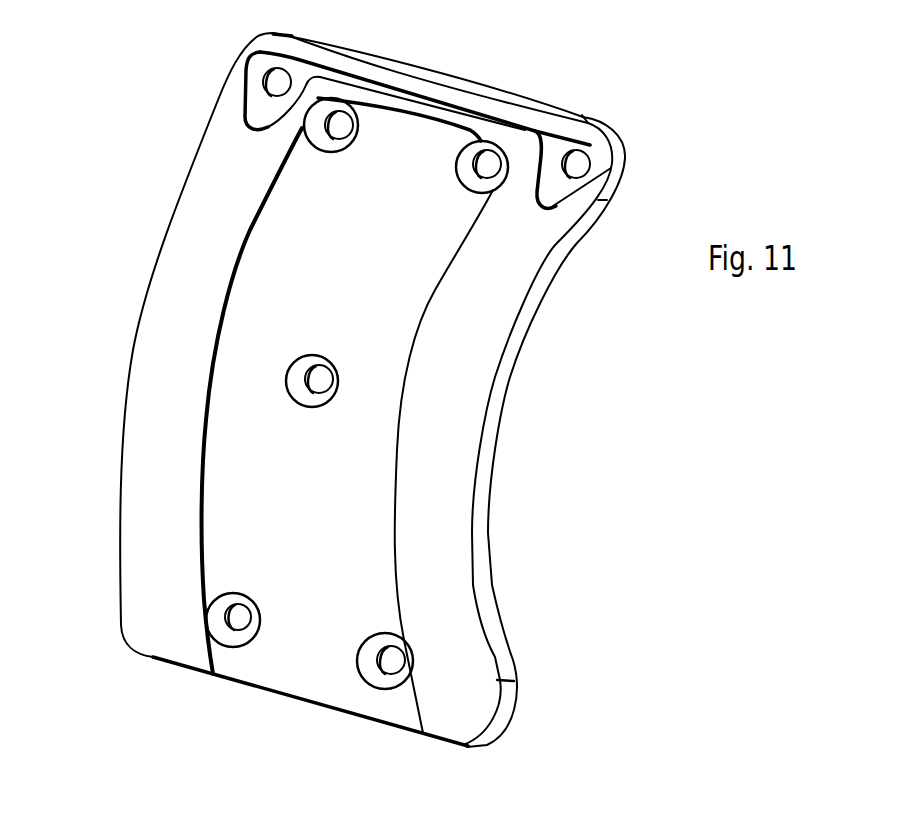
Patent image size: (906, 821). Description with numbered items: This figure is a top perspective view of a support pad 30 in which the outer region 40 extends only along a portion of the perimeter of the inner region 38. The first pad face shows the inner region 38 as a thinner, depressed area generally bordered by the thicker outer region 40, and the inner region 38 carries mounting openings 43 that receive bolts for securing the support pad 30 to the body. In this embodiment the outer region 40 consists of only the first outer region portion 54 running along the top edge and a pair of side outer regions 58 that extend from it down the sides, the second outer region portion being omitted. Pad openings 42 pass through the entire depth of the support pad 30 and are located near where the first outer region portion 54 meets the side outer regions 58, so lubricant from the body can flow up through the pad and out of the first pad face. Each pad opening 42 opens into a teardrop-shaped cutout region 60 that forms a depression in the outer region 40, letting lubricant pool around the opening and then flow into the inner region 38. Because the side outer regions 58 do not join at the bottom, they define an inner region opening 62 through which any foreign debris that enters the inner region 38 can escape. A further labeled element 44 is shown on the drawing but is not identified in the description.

The support pad 30 is at (361, 402).
The inner region 38 is at (262, 477).
The outer region 40 is at (465, 435).
The pad openings 42 is at (280, 82).
The mounting openings 43 is at (238, 620).
The upper flange 44 is at (425, 82).
The first outer region portion 54 is at (470, 100).
The side outer regions 58 is at (187, 213).
The cutout region 60 is at (258, 107).
The inner region opening 62 is at (297, 683).